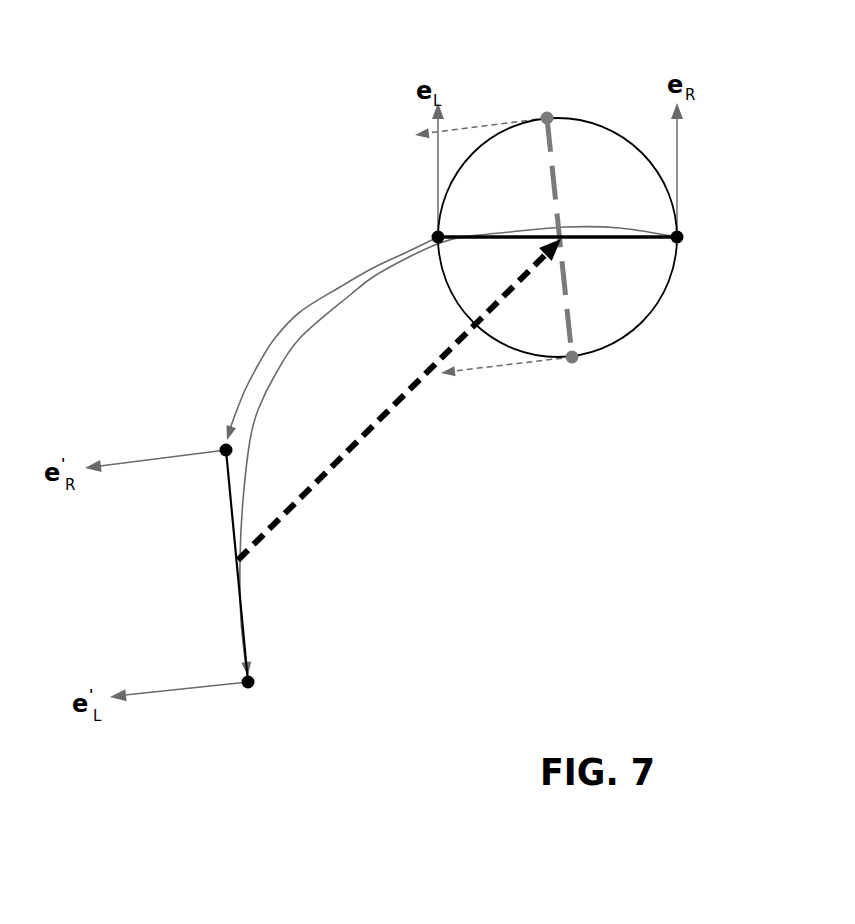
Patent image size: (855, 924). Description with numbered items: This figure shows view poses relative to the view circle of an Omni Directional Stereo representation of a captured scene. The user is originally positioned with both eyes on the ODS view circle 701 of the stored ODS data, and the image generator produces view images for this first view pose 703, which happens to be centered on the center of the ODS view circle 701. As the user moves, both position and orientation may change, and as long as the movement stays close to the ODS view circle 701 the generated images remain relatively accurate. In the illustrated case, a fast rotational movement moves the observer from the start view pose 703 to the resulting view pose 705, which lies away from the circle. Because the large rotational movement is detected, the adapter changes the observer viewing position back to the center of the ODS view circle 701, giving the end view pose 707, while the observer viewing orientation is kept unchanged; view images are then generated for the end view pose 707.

The ODS view circle 701 is at (572, 120).
The first view pose 703 is at (593, 240).
The resulting view pose 705 is at (243, 620).
The end view pose 707 is at (572, 287).